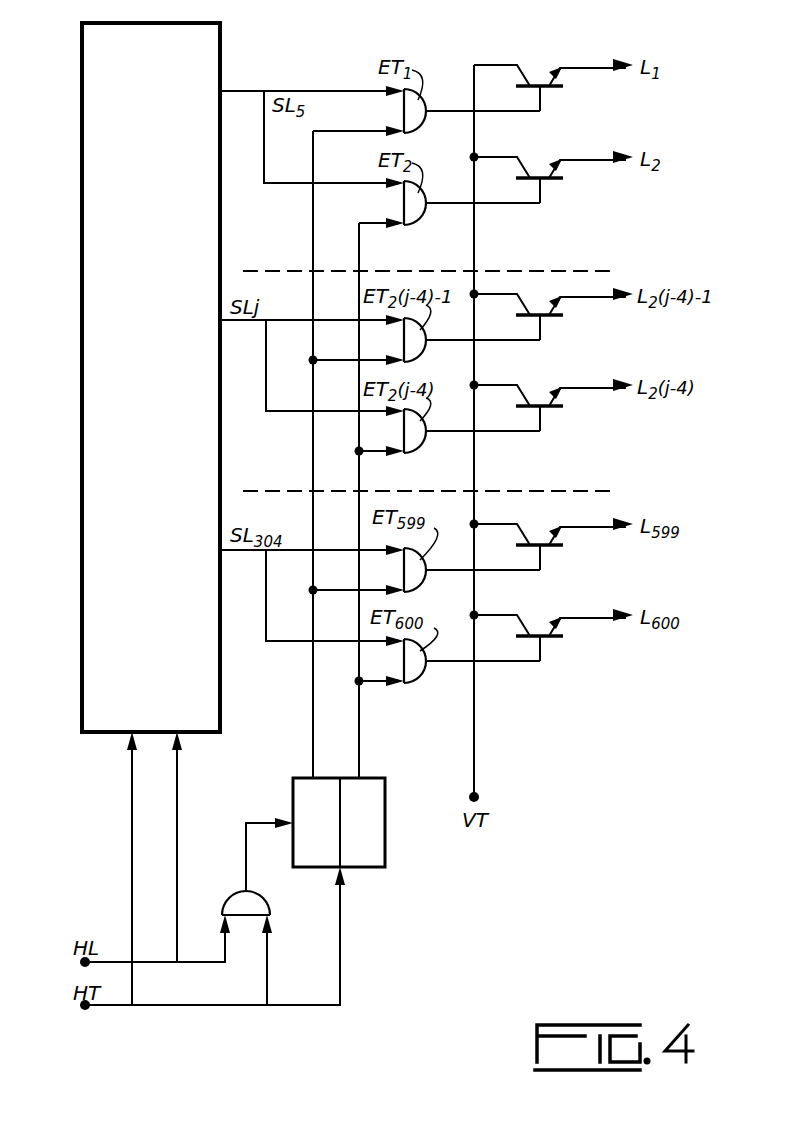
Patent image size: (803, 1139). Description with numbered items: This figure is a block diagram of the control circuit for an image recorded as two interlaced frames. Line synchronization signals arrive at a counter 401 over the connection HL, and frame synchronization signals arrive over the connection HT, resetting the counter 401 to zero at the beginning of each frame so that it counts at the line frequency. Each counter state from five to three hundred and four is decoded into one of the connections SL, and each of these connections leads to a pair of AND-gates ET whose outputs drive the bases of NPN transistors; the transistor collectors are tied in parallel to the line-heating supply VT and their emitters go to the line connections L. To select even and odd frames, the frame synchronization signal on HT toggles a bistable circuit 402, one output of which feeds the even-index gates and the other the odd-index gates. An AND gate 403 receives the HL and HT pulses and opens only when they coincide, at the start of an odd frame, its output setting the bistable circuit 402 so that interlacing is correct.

The counter 401 is at (112, 695).
The bistable circuit 402 is at (362, 848).
The AND gate 403 is at (250, 905).